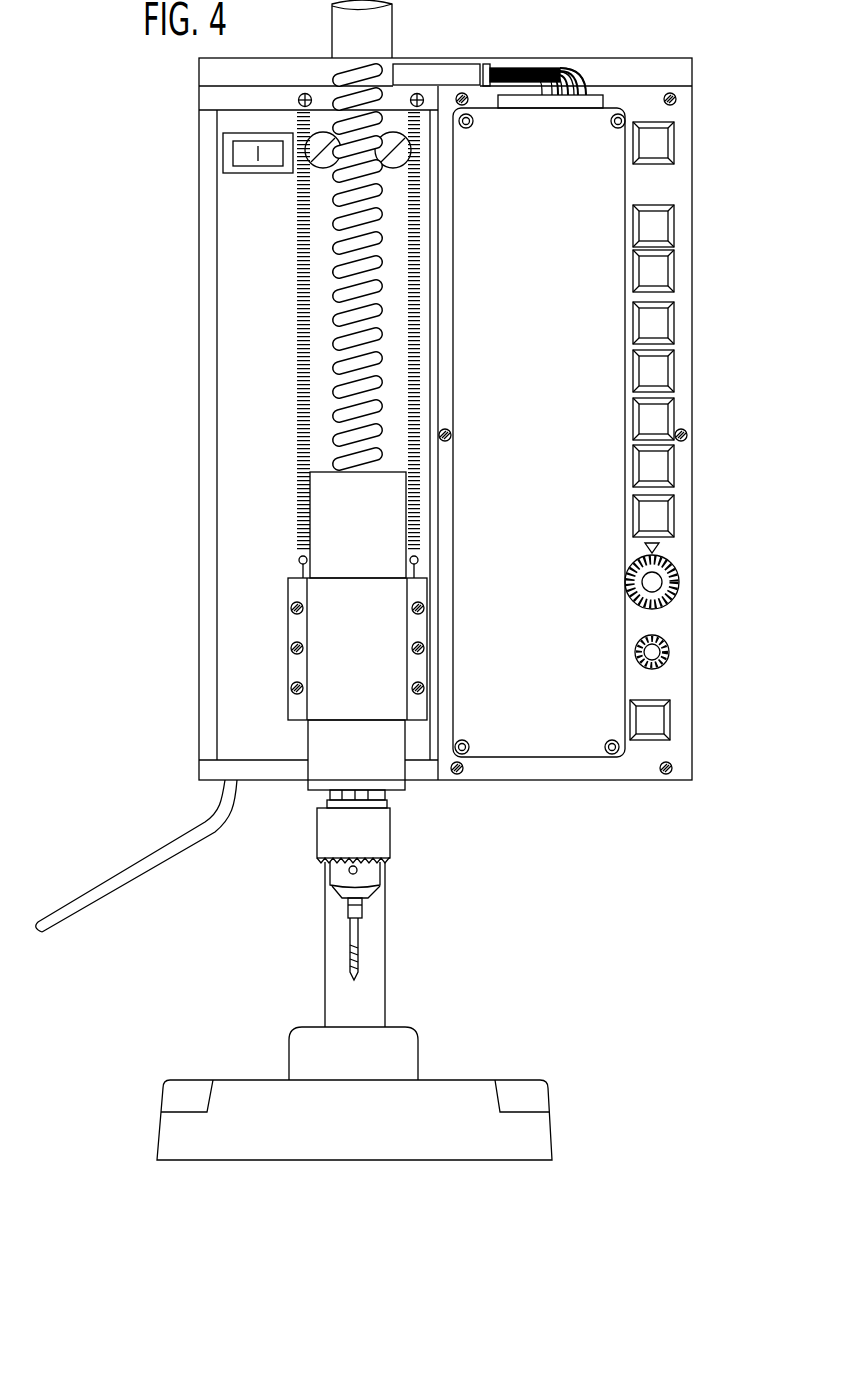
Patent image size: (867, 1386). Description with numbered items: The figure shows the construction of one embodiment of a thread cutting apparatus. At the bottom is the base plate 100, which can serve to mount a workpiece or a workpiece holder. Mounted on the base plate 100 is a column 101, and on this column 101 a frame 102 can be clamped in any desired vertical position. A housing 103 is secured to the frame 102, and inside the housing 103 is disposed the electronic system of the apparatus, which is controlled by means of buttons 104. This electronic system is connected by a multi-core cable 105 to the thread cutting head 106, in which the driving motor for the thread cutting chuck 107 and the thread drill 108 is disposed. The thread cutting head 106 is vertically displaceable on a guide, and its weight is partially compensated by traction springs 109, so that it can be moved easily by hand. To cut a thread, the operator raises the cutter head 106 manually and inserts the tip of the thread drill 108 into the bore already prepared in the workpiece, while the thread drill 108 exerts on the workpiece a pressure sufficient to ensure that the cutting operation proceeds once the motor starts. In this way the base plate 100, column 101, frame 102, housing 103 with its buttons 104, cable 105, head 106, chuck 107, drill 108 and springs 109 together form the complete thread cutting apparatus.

The base plate 100 is at (463, 1092).
The column 101 is at (383, 27).
The frame 102 is at (601, 789).
The housing 103 is at (561, 405).
The buttons 104 is at (633, 248).
The multi-core cable 105 is at (373, 260).
The thread cutting head 106 is at (383, 513).
The thread cutting chuck 107 is at (368, 873).
The thread drill 108 is at (358, 962).
The traction springs 109 is at (300, 338).